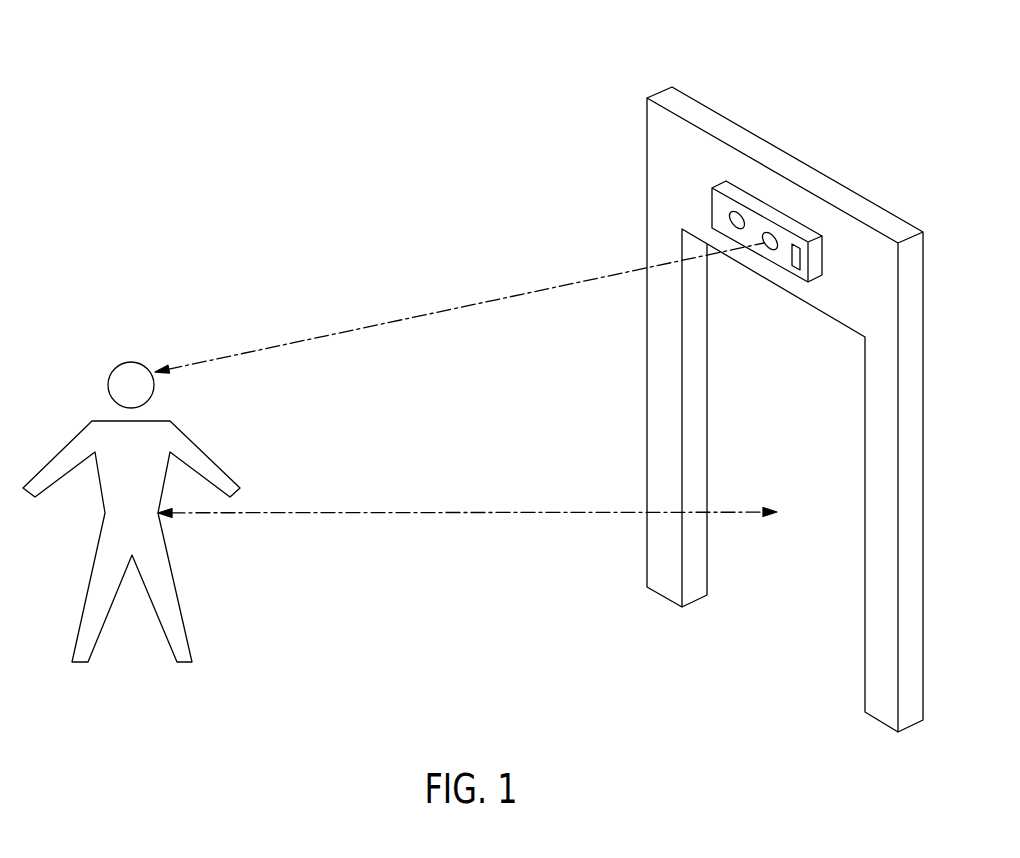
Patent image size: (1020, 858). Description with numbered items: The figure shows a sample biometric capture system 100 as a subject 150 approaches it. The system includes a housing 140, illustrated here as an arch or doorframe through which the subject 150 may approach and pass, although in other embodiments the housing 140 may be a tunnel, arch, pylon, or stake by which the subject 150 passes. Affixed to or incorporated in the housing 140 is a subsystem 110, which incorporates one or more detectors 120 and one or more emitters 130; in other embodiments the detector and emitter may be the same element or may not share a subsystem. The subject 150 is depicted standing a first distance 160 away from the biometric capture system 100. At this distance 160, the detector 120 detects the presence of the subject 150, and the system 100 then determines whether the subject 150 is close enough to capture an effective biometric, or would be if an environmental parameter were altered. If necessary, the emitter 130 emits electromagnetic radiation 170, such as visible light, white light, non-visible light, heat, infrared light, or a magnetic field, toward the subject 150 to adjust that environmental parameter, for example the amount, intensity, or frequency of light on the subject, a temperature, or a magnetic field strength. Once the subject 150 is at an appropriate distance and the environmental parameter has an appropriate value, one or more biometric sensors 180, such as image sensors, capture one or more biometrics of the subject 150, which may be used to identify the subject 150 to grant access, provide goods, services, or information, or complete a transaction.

The biometric capture system 100 is at (848, 76).
The subsystem 110 is at (709, 215).
The detector 120 is at (670, 211).
The emitter 130 is at (758, 168).
The housing 140 is at (742, 409).
The subject 150 is at (78, 292).
The first distance 160 is at (467, 552).
The electromagnetic radiation 170 is at (459, 301).
The biometric sensor 180 is at (809, 197).